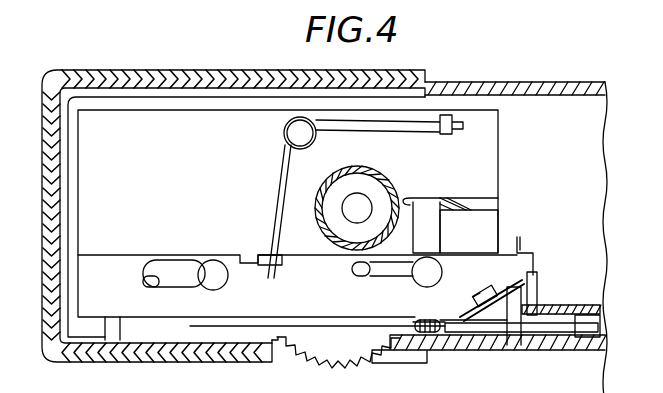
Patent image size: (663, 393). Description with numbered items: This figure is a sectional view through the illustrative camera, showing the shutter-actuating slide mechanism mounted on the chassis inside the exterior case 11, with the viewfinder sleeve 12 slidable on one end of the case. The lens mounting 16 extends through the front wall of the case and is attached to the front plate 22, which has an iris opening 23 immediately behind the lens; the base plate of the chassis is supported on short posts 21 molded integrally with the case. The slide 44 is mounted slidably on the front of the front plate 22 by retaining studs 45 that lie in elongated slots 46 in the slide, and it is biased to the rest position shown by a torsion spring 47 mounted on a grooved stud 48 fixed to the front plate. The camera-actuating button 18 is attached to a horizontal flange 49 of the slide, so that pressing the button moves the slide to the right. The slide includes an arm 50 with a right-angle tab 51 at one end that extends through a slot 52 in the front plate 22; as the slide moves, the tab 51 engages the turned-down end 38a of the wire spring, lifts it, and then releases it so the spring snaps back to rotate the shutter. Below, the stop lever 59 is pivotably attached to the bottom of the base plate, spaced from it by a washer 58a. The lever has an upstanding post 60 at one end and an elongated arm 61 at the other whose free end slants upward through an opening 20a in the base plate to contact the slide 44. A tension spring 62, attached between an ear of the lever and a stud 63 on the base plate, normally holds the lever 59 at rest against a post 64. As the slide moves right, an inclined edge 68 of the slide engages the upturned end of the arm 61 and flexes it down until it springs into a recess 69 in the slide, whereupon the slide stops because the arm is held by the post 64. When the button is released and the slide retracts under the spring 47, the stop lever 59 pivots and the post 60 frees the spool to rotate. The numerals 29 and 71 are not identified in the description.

The exterior case 11 is at (567, 82).
The viewfinder sleeve 12 is at (189, 70).
The lens mounting 16 is at (372, 176).
The camera-actuating button 18 is at (350, 351).
The opening in the base plate 20a is at (517, 338).
The posts 21 is at (112, 330).
The front plate 22 is at (178, 191).
The iris opening 23 is at (352, 198).
The chamber 29 is at (568, 160).
The turned-down end of the wire spring 38a is at (465, 186).
The slide 44 is at (317, 305).
The retaining studs 45 is at (213, 279).
The elongated slots 46 is at (148, 281).
The torsion spring 47 is at (281, 165).
The grooved stud 48 is at (306, 133).
The horizontal flange 49 is at (254, 321).
The arm of the slide 50 is at (430, 228).
The right-angle tab 51 is at (423, 200).
The slot in the front plate 52 is at (498, 202).
The washer 58a is at (488, 334).
The stop lever 59 is at (590, 338).
The upstanding post 60 is at (586, 306).
The elongated arm 61 is at (523, 238).
The tension spring 62 is at (427, 321).
The stud 63 is at (413, 322).
The post 64 is at (538, 288).
The inclined edge 68 is at (492, 277).
The recess 69 is at (476, 291).
The pivot pin 71 is at (473, 297).